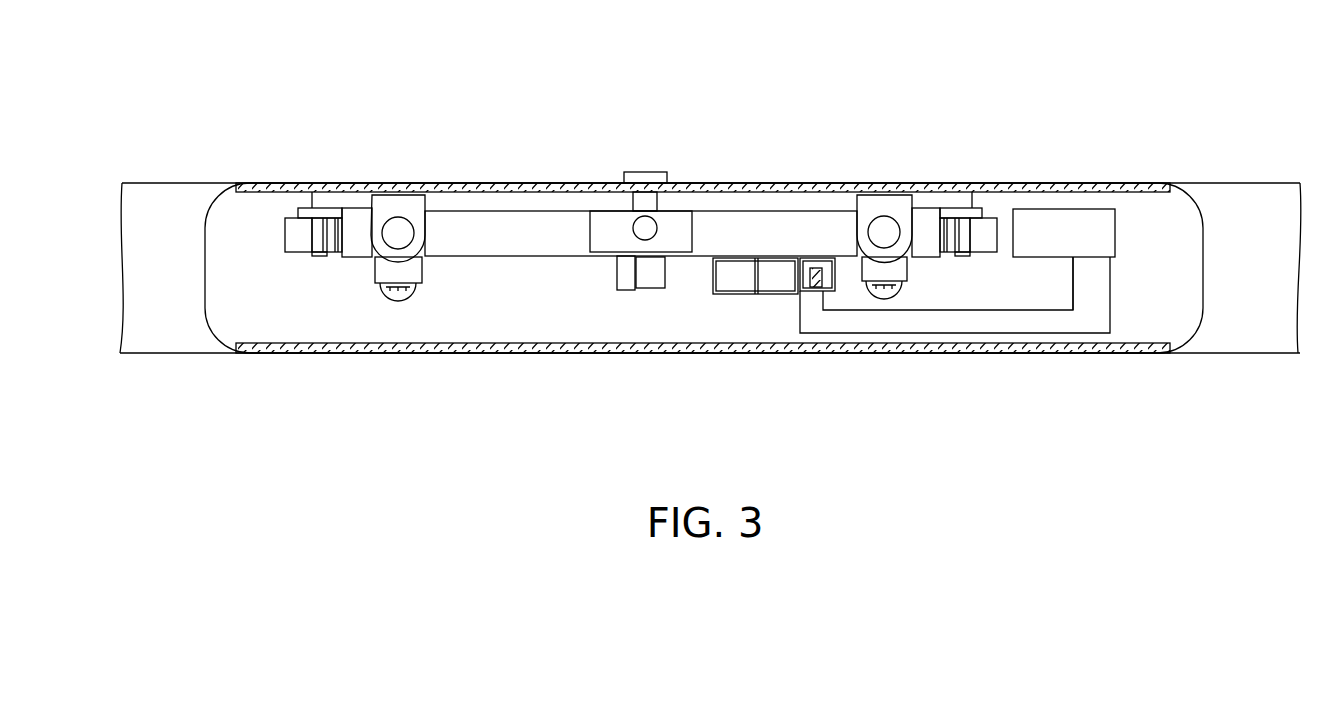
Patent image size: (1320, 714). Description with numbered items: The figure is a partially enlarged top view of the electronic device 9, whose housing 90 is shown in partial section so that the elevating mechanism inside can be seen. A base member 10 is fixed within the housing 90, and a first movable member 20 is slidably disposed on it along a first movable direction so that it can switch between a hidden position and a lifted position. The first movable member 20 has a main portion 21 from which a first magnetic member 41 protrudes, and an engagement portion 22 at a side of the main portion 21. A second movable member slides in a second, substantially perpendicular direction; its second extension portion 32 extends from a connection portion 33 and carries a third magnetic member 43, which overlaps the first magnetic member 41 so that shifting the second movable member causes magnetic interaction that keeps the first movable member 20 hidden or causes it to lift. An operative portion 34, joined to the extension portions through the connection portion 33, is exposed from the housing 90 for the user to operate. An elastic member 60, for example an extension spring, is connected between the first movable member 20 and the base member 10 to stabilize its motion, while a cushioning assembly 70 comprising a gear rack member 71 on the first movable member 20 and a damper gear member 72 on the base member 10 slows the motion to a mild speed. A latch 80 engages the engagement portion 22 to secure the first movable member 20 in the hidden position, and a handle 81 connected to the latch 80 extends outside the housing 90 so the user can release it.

The electronic device 9 is at (172, 77).
The housing 90 is at (150, 256).
The base member 10 is at (985, 200).
The first movable member 20 is at (641, 264).
The main portion 21 is at (558, 232).
The engagement portion 22 is at (625, 277).
The handle 81 is at (646, 172).
The latch 80 is at (650, 275).
The elastic member 60 is at (410, 300).
The cushioning assembly 70 is at (629, 333).
The gear rack member 71 is at (357, 245).
The gear member 72 is at (307, 238).
The third magnetic member 43 is at (755, 298).
The first magnetic member 41 is at (832, 281).
The second extension portion 32 is at (995, 320).
The connection portion 33 is at (1093, 285).
The operative portion 34 is at (1080, 232).